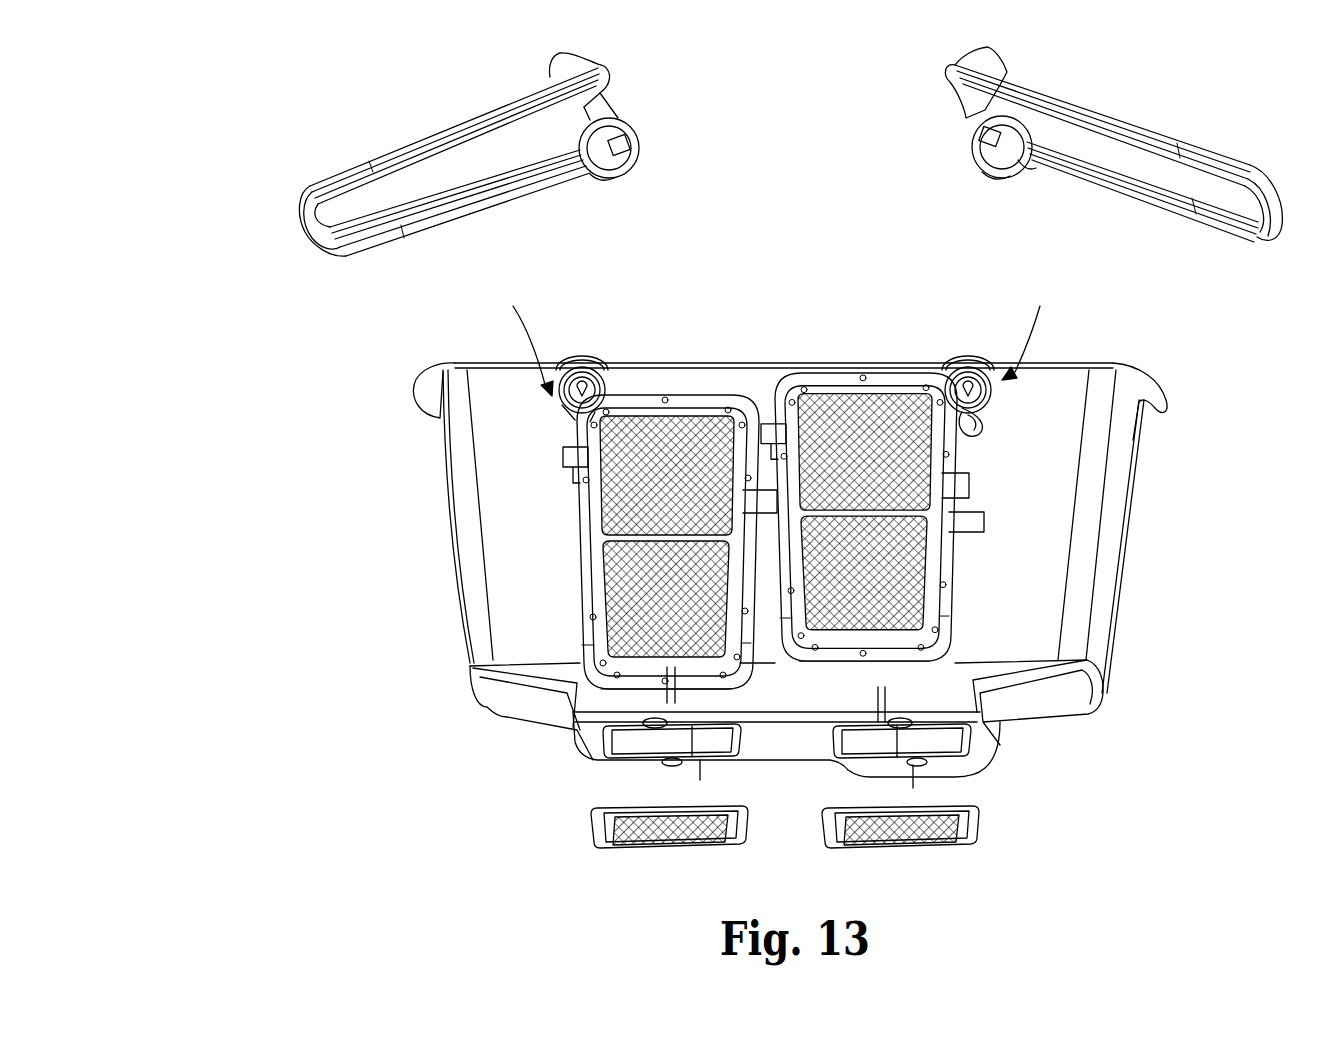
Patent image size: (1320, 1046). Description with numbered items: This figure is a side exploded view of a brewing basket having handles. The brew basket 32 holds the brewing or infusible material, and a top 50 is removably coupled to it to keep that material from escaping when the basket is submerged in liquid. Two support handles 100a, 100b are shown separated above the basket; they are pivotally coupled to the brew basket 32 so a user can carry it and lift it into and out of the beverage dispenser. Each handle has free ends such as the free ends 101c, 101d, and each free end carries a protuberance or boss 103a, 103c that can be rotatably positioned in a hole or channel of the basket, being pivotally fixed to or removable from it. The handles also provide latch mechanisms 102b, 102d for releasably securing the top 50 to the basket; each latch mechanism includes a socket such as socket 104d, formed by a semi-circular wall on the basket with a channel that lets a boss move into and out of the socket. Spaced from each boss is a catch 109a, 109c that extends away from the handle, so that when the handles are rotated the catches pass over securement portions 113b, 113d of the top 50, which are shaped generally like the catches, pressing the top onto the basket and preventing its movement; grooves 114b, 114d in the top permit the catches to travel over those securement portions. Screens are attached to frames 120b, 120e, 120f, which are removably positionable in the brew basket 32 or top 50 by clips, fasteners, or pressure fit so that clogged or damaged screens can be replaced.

The brew basket 32 is at (1110, 552).
The top 50 is at (778, 362).
The support handle 100a is at (300, 200).
The support handle 100b is at (1240, 246).
The free end 101c is at (995, 56).
The free end 101d is at (1022, 178).
The latch mechanism 102b is at (509, 343).
The latch mechanism 102d is at (1046, 335).
The boss 103a is at (614, 134).
The boss 103c is at (972, 133).
The socket 104d is at (993, 396).
The catch 109a is at (592, 190).
The catch 109c is at (990, 178).
The securement portion 113b is at (588, 362).
The securement portion 113d is at (970, 362).
The groove 114b is at (560, 365).
The groove 114d is at (950, 365).
The frame 120b is at (648, 398).
The frame 120e is at (742, 848).
The frame 120f is at (990, 826).